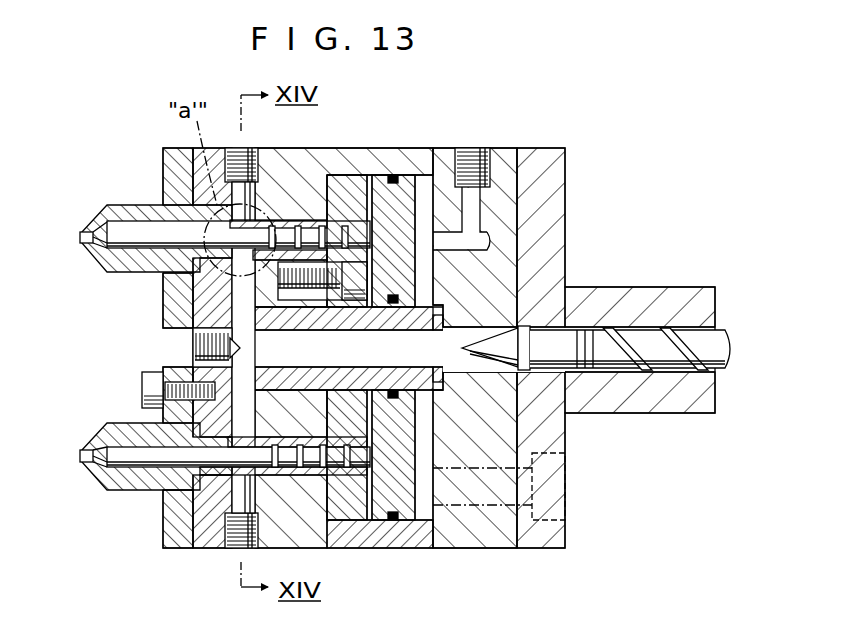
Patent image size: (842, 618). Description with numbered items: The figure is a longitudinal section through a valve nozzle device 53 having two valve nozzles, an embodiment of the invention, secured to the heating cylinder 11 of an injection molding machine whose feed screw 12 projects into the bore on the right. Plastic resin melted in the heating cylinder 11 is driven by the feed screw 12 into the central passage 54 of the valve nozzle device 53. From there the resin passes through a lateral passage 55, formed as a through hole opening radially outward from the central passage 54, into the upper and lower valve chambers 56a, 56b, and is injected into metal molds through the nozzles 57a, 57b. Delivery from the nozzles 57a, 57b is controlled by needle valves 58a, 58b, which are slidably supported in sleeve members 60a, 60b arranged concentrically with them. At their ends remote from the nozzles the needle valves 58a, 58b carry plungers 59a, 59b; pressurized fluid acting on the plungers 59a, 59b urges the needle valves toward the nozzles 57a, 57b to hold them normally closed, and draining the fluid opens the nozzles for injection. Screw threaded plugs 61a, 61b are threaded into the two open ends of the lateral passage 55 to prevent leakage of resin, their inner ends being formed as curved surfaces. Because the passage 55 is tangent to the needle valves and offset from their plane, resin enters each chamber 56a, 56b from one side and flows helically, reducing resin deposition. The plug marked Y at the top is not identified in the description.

The heating cylinder 11 is at (628, 403).
The feed screw 12 is at (645, 337).
The valve nozzle device 53 is at (395, 553).
The central passage 54 is at (283, 342).
The lateral passage 55 is at (236, 294).
The valve chamber 56a is at (148, 228).
The valve chamber 56b is at (133, 470).
The nozzle 57a is at (80, 237).
The nozzle 57b is at (80, 455).
The needle valve 58a is at (122, 212).
The needle valve 58b is at (135, 445).
The plunger 59a is at (405, 195).
The plunger 59b is at (405, 517).
The sleeve member 60a is at (338, 185).
The sleeve member 60b is at (347, 507).
The screw threaded plug 61a is at (246, 156).
The screw threaded plug 61b is at (232, 537).
The plug Y is at (470, 146).